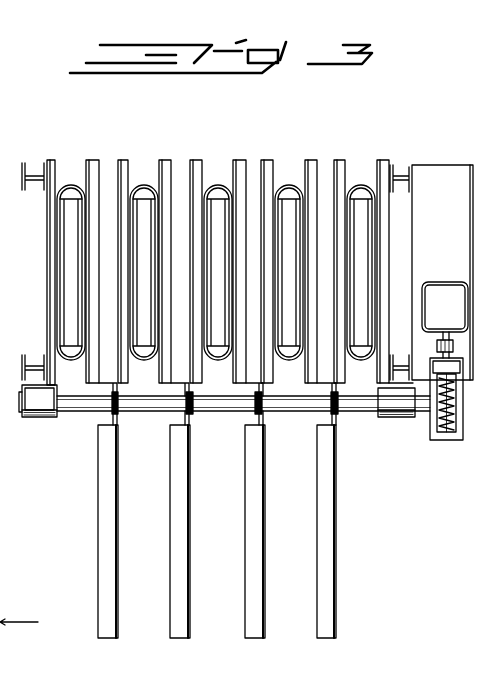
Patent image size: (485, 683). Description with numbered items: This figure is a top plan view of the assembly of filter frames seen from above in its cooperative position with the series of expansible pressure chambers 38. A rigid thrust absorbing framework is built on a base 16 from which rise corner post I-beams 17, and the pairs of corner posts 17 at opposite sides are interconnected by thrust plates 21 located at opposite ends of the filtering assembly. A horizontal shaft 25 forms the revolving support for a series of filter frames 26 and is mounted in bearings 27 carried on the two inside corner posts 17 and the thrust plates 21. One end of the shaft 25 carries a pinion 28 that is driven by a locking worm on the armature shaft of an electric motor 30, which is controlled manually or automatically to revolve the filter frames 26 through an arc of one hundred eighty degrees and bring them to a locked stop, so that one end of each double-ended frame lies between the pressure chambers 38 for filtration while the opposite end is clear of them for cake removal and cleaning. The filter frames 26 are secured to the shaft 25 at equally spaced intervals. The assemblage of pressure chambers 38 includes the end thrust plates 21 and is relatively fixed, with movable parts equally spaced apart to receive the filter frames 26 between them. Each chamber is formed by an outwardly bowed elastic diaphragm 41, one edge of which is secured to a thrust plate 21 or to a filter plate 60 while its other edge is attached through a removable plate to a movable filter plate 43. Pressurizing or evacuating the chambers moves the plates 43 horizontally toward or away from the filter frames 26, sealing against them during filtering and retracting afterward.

The base 16 is at (0, 579).
The corner post I-beams 17 is at (0, 44).
The thrust plates 21 is at (53, 279).
The horizontal shaft 25 is at (222, 412).
The filter frames 26 is at (103, 166).
The bearings 27 is at (40, 417).
The pinion 28 is at (446, 432).
The electric motor 30 is at (433, 317).
The pressure chambers 38 is at (216, 238).
The elastic strip or diaphragm 41 is at (59, 268).
The filter plate 43 is at (195, 165).
The filter plate 60 is at (163, 164).